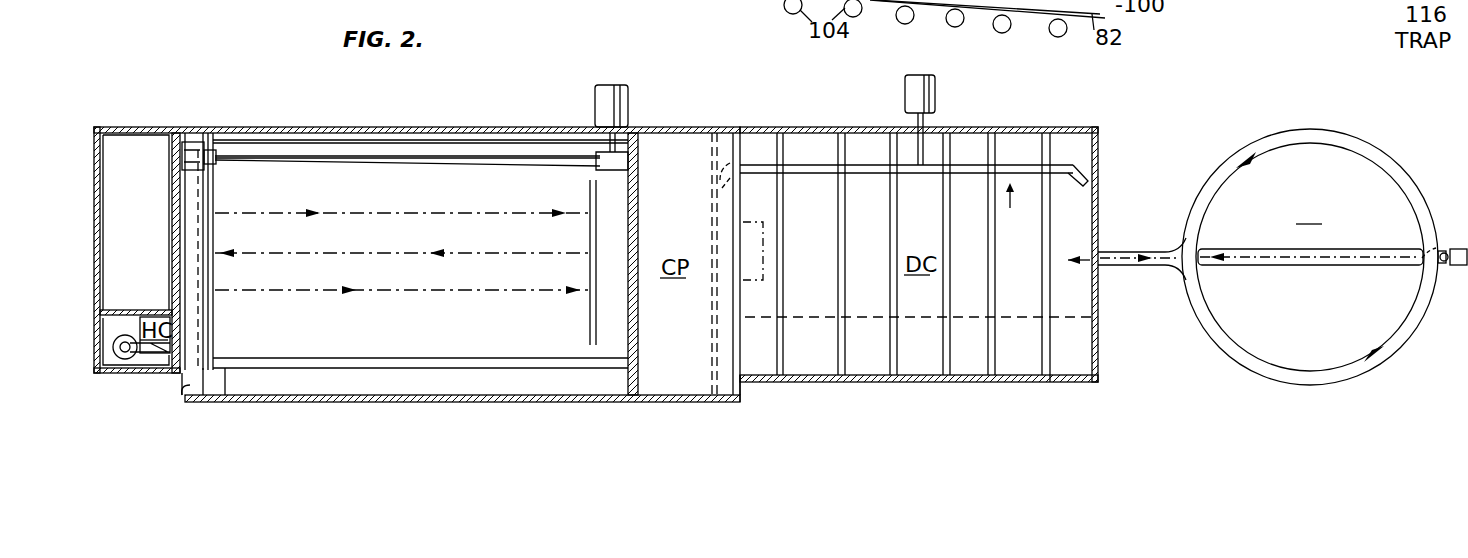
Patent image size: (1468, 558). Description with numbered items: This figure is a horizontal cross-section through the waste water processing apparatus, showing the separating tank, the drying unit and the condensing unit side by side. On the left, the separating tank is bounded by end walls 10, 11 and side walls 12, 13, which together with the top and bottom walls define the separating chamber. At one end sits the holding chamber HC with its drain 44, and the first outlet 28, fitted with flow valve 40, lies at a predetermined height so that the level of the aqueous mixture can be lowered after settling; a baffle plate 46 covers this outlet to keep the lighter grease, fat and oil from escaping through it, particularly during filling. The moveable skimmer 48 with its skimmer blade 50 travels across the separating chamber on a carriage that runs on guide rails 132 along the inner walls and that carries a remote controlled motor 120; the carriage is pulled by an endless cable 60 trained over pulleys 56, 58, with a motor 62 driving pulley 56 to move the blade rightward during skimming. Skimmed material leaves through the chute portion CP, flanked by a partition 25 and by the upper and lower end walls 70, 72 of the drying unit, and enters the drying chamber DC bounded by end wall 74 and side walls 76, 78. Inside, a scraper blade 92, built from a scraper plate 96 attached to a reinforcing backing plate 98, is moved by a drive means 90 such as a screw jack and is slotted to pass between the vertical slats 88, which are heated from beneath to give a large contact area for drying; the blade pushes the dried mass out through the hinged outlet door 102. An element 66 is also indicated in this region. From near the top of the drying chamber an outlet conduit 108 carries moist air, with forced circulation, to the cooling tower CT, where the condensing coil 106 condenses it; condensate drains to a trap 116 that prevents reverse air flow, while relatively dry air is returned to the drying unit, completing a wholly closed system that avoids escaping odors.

The end wall 10 is at (199, 406).
The end wall 11 is at (742, 388).
The side wall 12 is at (414, 400).
The side wall 13 is at (466, 130).
The partition wall 25 is at (632, 388).
The first outlet 28 is at (135, 360).
The flow valve 40 is at (152, 360).
The drain 44 is at (128, 330).
The baffle plate 46 is at (178, 232).
The moveable skimmer 48 is at (232, 194).
The skimmer blade 50 is at (246, 344).
The pulley 56 is at (200, 133).
The pulley 58 is at (609, 262).
The endless cable 60 is at (552, 165).
The motor 62 is at (596, 103).
The chemical feed unit 66 is at (750, 284).
The upper end wall 70 is at (733, 150).
The lower end wall 72 is at (708, 366).
The end wall 74 is at (1098, 298).
The side wall 76 is at (972, 130).
The side wall 78 is at (915, 390).
The vertical slats 88 is at (838, 360).
The drive means 90 is at (905, 102).
The scraper blade 92 is at (1012, 214).
The scraper plate 96 is at (858, 178).
The reinforcing backing plate 98 is at (1000, 170).
The hinged outlet door 102 is at (1062, 368).
The condensing coil 106 is at (1338, 378).
The outlet conduit 108 is at (1110, 250).
The trap 116 is at (1447, 265).
The remote controlled motor 120 is at (230, 388).
The guide rails 132 is at (360, 140).